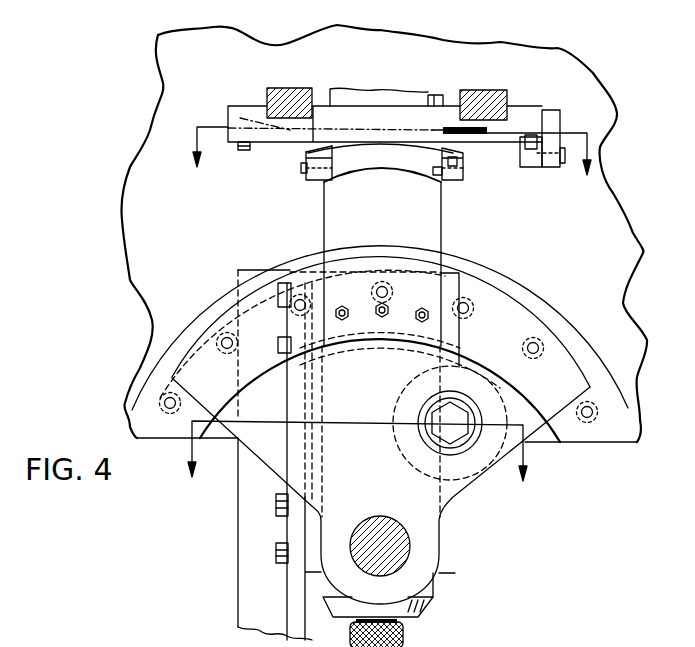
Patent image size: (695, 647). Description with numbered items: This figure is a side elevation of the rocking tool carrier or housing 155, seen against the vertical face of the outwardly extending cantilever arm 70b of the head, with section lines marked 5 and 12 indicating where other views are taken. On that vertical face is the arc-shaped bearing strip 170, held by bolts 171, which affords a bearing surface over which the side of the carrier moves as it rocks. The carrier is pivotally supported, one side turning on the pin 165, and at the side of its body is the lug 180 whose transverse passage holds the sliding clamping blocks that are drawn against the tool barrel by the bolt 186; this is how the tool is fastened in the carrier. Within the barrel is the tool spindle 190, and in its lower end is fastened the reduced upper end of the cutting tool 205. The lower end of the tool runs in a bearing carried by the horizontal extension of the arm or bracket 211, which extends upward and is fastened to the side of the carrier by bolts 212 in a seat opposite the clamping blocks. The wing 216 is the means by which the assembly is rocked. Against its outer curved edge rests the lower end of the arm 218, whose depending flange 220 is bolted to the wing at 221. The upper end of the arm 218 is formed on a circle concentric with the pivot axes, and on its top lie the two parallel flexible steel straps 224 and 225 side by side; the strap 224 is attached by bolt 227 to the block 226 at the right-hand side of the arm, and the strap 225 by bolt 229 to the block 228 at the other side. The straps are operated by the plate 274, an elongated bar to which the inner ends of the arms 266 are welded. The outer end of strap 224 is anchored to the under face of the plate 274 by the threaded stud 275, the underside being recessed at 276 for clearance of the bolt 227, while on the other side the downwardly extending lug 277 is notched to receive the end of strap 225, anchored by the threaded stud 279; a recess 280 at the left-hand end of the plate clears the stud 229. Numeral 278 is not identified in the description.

The cantilever arm 70b is at (633, 323).
The bearing strip 170 is at (628, 444).
The wing 216 is at (512, 329).
The rocking tool carrier 155 is at (255, 317).
The depending flange 220 is at (432, 292).
The bolts 171 is at (224, 350).
The bolts 221 is at (418, 320).
The arm 218 is at (443, 221).
The lug 180 is at (507, 454).
The bolt 186 is at (436, 432).
The pin 165 is at (405, 548).
The tool spindle 190 is at (432, 594).
The cutting tool 205 is at (406, 636).
The arm or bracket 211 is at (240, 588).
The bolts 212 is at (276, 541).
The section line 5- 5 is at (364, 461).
The section line 12- 12 is at (394, 162).
The recess 280 is at (228, 110).
The arms 266 is at (293, 88).
The plate 274 is at (403, 115).
The block 228 is at (316, 152).
The bolt 229 is at (307, 150).
The flexible steel strap 224 is at (272, 142).
The threaded stud 275 is at (243, 150).
The block 226 is at (457, 178).
The bolt 227 is at (463, 153).
The flexible steel strap 225 is at (487, 130).
The recess 276 is at (492, 125).
The lug 277 is at (558, 122).
The end bracket 278 is at (523, 167).
The threaded stud 279 is at (533, 117).